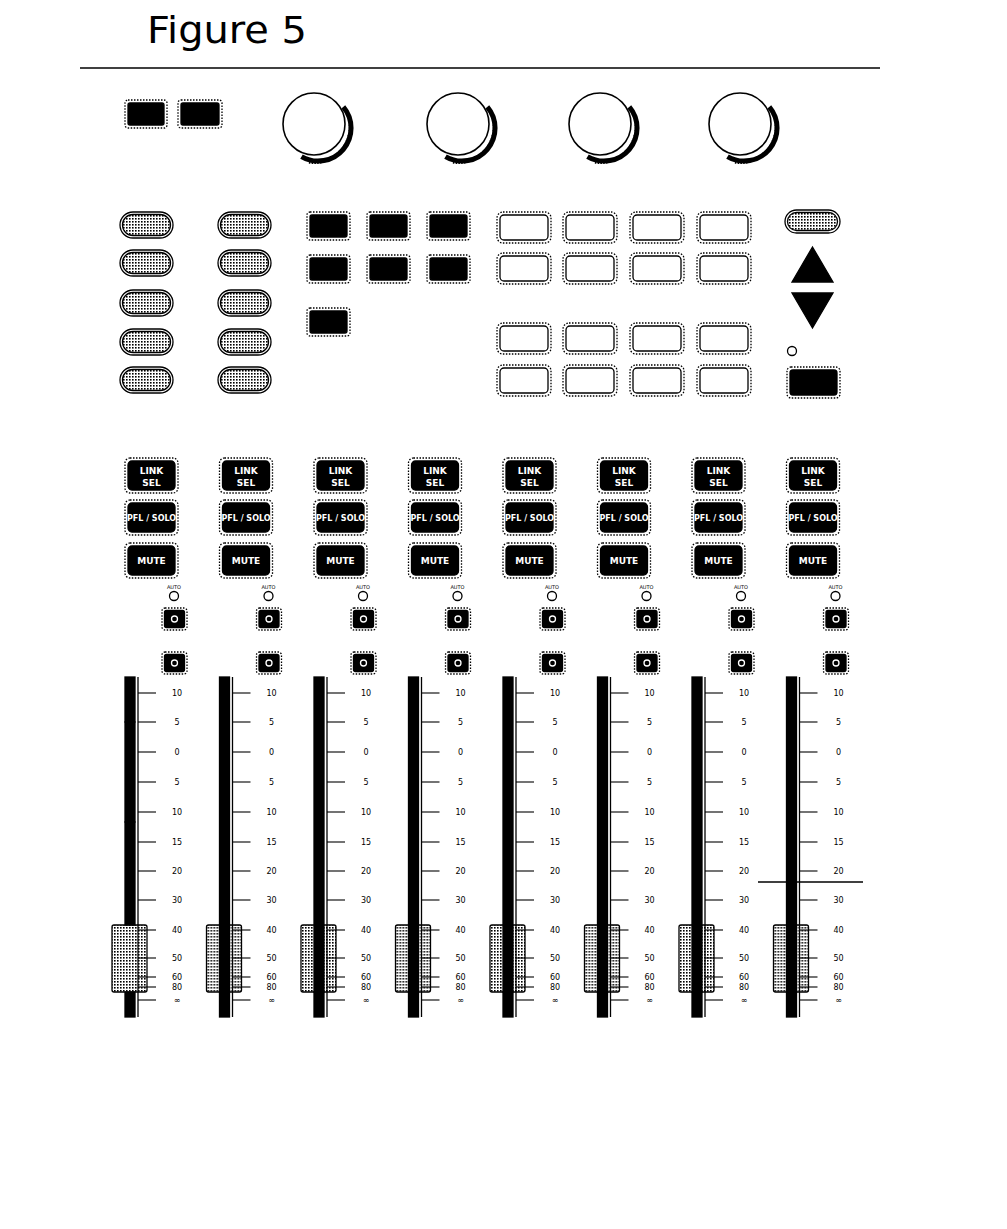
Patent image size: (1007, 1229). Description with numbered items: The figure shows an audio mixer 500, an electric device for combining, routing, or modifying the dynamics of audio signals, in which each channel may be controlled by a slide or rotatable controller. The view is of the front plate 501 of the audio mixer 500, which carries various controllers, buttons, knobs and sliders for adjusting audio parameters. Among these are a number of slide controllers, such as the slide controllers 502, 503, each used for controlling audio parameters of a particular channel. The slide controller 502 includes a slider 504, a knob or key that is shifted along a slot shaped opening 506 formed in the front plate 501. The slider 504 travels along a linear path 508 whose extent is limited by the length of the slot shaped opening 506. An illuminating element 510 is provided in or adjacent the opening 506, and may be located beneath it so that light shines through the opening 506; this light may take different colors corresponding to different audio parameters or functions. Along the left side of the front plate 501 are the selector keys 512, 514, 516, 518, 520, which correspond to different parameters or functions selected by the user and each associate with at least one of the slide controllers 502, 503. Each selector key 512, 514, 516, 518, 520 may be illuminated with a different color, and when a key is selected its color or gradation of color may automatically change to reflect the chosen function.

The audio mixer 500 is at (737, 40).
The front plate 501 is at (434, 380).
The slide controller 502 is at (131, 1027).
The slide controller 503 is at (798, 1025).
The slider 504 is at (112, 960).
The slot shaped opening 506 is at (126, 871).
The linear path 508 is at (112, 764).
The illuminating element 510 is at (138, 677).
The selector key 512 is at (118, 227).
The selector key 514 is at (118, 265).
The selector key 516 is at (118, 303).
The selector key 518 is at (118, 342).
The selector key 520 is at (118, 381).